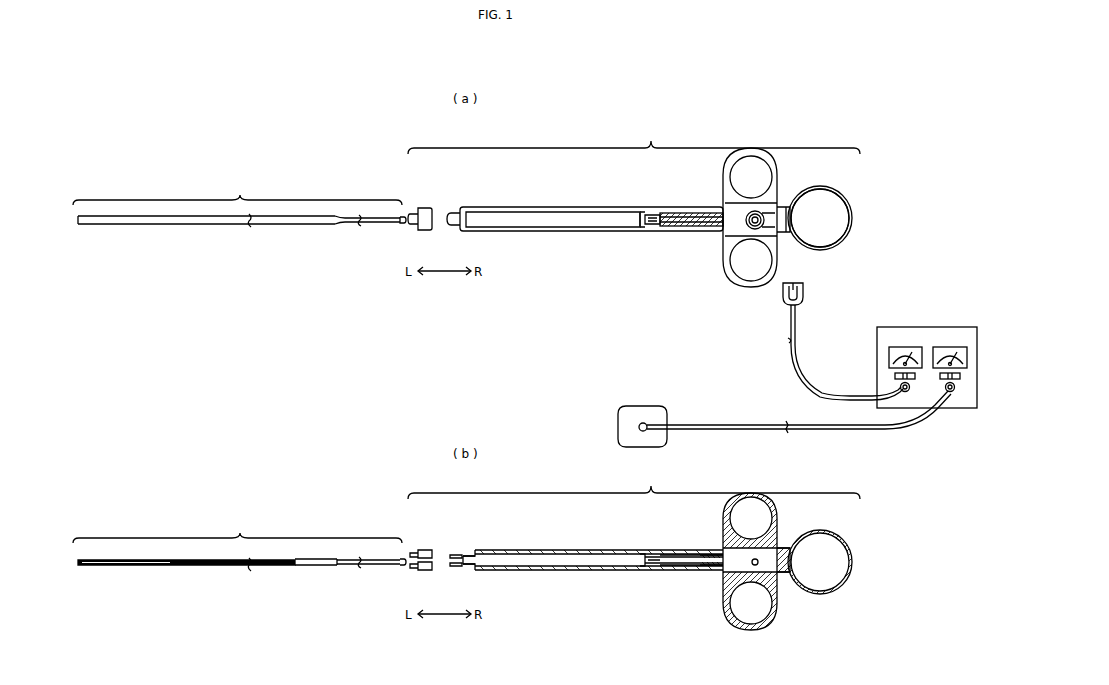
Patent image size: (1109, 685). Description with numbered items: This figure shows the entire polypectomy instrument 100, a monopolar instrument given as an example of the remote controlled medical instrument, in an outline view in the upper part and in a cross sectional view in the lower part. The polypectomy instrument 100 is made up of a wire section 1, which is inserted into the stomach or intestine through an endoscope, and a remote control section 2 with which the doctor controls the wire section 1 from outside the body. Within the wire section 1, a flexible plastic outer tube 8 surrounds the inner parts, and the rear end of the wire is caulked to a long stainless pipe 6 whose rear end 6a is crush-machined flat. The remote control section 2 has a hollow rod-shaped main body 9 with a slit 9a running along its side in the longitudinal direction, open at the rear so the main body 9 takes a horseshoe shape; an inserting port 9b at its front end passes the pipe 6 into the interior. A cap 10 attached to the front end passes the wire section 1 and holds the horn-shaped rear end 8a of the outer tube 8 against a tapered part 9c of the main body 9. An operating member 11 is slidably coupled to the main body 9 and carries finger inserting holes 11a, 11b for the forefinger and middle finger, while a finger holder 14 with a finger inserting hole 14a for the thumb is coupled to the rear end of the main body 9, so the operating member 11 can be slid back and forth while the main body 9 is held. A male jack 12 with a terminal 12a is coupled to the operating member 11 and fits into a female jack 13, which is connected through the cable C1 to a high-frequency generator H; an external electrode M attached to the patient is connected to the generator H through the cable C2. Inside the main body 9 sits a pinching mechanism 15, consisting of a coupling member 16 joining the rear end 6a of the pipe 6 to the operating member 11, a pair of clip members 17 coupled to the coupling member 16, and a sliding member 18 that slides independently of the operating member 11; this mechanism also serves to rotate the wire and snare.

The wire section 1 is at (239, 375).
The remote control section 2 is at (634, 311).
The pipe 6 is at (369, 560).
The rear end of pipe 6a is at (401, 560).
The outer tube 8 is at (300, 559).
The rear end of outer tube 8a is at (337, 559).
The main body 9 is at (584, 208).
The slit 9a is at (537, 213).
The inserting port 9b is at (478, 570).
The tapered part 9c is at (456, 556).
The cap 10 is at (427, 208).
The operating member 11 is at (723, 180).
The finger inserting hole 11a is at (737, 165).
The finger inserting hole 11b is at (737, 272).
The male jack 12 is at (763, 210).
The terminal 12a is at (762, 228).
The female jack 13 is at (806, 292).
The finger holder 14 is at (838, 190).
The finger inserting hole 14a is at (815, 192).
The pinching mechanism 15 is at (654, 182).
The coupling member 16 is at (650, 230).
The clip member 17 is at (641, 213).
The sliding member 18 is at (675, 212).
The polypectomy instrument 100 is at (545, 139).
The cable C1 is at (805, 354).
The cable C2 is at (725, 425).
The high-frequency generator H is at (927, 327).
The external electrode M is at (641, 406).